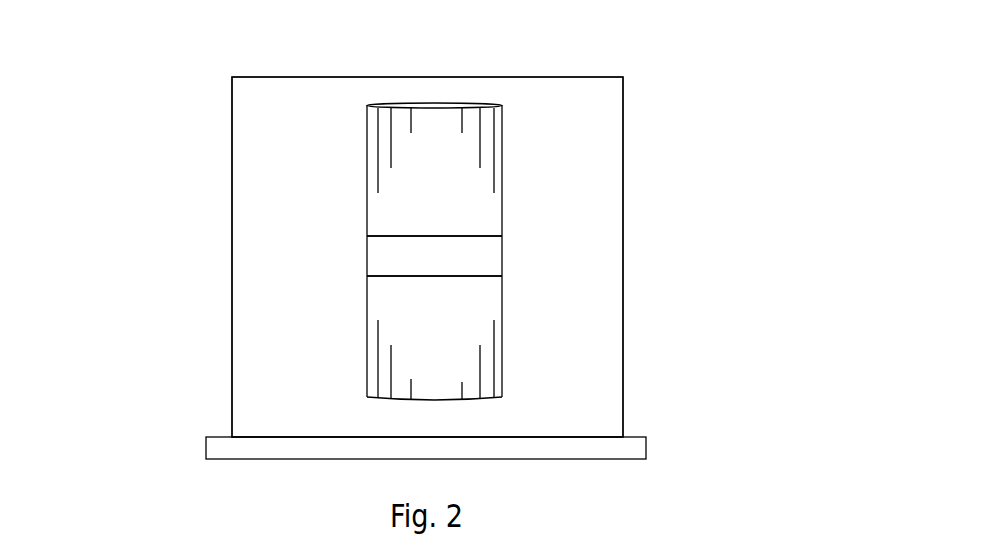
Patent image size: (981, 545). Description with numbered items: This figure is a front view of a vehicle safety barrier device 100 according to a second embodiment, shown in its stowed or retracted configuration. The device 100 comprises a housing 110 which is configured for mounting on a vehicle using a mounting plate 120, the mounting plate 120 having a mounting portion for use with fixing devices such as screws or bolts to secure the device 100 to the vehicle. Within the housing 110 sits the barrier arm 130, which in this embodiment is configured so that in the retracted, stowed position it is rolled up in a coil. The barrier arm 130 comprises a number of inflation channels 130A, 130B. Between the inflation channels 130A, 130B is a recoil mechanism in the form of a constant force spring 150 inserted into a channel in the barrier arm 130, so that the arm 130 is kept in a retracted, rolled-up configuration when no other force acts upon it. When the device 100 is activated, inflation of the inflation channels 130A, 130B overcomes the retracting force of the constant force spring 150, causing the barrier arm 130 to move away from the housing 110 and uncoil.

The vehicle safety barrier device 100 is at (190, 59).
The housing 110 is at (622, 262).
The mounting plate 120 is at (648, 450).
The barrier arm 130 is at (433, 105).
The inflation channel 130A is at (383, 217).
The inflation channel 130B is at (486, 301).
The constant force spring 150 is at (493, 253).